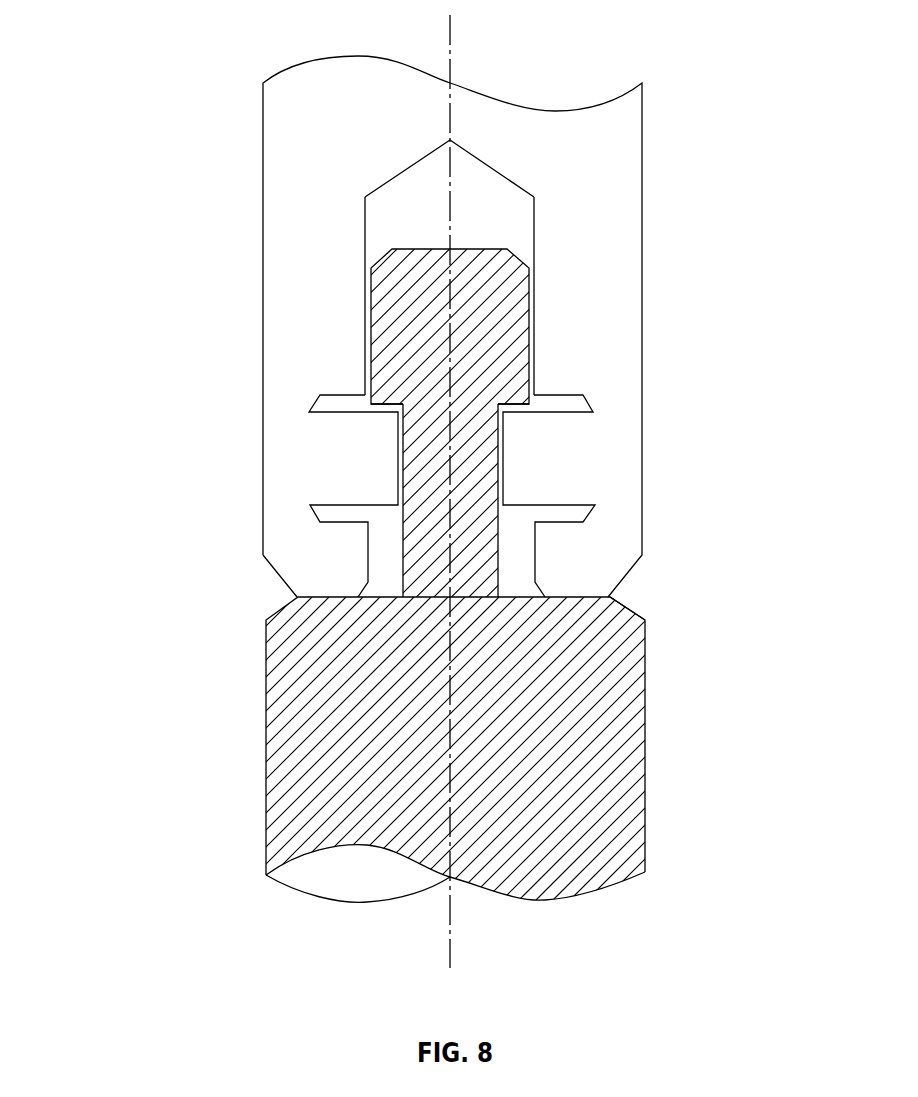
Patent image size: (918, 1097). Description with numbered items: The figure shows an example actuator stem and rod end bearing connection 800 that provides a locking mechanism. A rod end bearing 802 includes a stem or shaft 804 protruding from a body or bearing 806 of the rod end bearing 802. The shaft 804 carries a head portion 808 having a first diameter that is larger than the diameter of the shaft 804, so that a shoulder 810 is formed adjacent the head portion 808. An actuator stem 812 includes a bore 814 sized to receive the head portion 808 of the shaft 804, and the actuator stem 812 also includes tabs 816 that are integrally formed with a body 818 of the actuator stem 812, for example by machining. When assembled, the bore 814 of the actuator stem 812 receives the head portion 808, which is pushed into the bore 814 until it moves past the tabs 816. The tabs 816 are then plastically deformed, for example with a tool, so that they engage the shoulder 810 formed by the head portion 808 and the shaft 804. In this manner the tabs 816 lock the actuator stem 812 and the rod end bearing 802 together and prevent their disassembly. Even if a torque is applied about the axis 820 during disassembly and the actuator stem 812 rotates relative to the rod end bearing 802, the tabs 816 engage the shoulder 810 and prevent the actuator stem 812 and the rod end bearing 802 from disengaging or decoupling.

The actuator stem and rod end bearing connection 800 is at (164, 47).
The rod end bearing 802 is at (265, 746).
The shaft 804 is at (422, 533).
The body 806 is at (639, 650).
The head portion 808 is at (522, 296).
The shoulder 810 is at (378, 403).
The actuator stem 812 is at (263, 238).
The bore 814 is at (512, 186).
The tabs 816 is at (360, 473).
The body 818 is at (287, 331).
The axis 820 is at (448, 44).